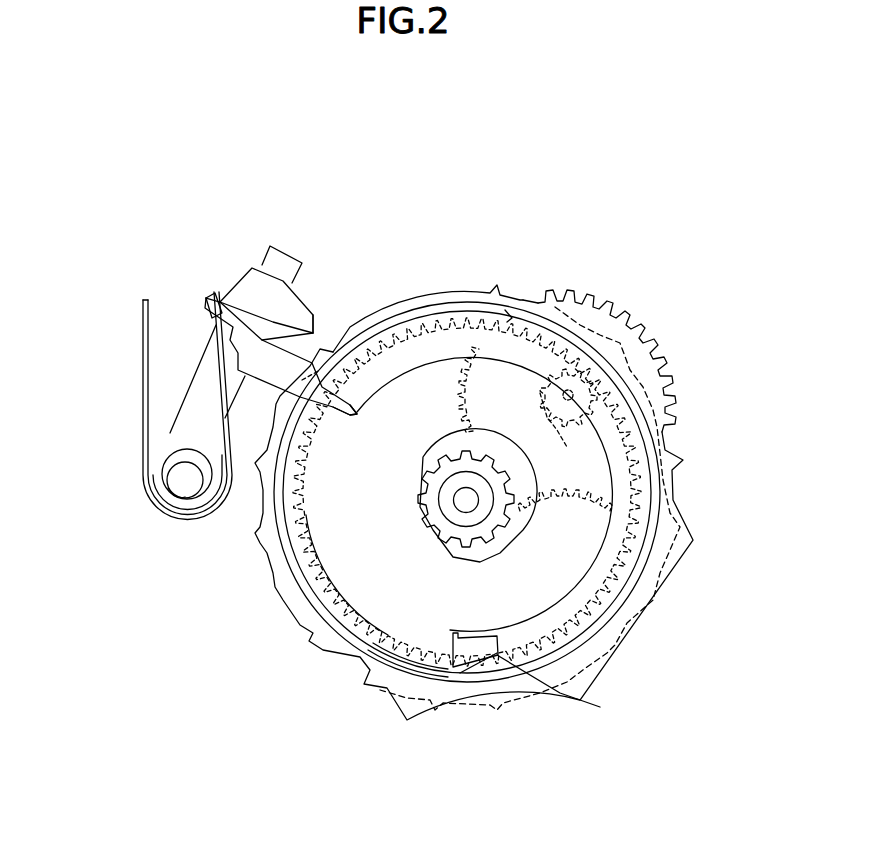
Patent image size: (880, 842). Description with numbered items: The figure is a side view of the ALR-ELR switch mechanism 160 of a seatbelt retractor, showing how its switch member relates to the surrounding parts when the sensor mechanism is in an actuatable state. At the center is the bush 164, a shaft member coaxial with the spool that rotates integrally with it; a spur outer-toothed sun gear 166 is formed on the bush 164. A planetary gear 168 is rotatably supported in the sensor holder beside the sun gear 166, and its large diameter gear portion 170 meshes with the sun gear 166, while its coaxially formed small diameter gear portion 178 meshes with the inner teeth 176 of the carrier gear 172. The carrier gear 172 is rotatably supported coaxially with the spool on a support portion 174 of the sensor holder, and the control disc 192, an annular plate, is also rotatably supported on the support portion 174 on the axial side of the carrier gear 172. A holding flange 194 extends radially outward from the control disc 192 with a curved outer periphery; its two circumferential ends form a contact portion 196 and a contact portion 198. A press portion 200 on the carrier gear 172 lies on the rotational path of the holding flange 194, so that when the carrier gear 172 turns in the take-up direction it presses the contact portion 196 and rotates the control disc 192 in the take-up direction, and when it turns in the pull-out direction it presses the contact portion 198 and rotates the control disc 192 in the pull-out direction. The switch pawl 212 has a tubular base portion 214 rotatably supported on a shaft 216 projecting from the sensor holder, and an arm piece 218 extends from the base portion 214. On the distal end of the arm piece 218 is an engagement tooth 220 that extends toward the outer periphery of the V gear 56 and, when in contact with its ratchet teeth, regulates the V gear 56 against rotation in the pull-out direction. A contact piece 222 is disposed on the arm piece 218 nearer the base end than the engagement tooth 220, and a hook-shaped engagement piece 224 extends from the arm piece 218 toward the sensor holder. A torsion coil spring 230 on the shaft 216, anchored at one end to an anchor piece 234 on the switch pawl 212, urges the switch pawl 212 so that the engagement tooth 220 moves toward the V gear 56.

The ALR-ELR switch mechanism 160 is at (493, 186).
The V gear 56 is at (467, 292).
The carrier gear 172 is at (415, 300).
The planetary gear 168 is at (628, 305).
The large diameter gear portion 170 is at (637, 357).
The bush 164 is at (468, 549).
The sun gear 166 is at (433, 533).
The support portion 174 is at (505, 552).
The small diameter gear portion 178 is at (535, 429).
The control disc 192 is at (565, 542).
The holding flange 194 is at (343, 573).
The contact portion 196 is at (354, 416).
The contact portion 198 is at (453, 634).
The press portion 200 is at (565, 695).
The inner teeth 176 is at (640, 655).
The switch pawl 212 is at (243, 277).
The base portion 214 is at (175, 495).
The shaft 216 is at (198, 490).
The arm piece 218 is at (183, 392).
The engagement tooth 220 is at (315, 327).
The contact piece 222 is at (220, 377).
The engagement piece 224 is at (262, 262).
The torsion coil spring 230 is at (138, 421).
The anchor piece 234 is at (218, 290).